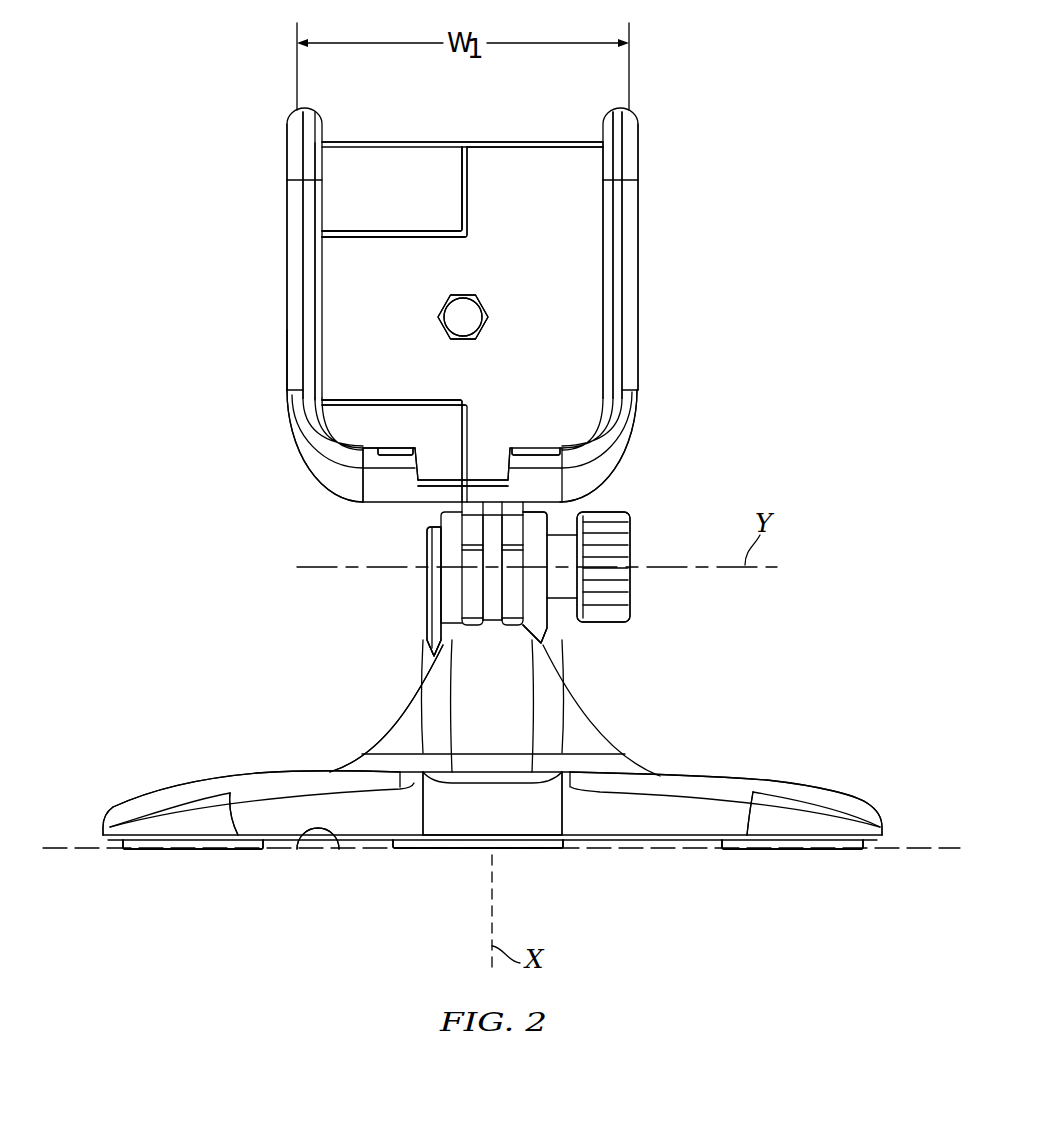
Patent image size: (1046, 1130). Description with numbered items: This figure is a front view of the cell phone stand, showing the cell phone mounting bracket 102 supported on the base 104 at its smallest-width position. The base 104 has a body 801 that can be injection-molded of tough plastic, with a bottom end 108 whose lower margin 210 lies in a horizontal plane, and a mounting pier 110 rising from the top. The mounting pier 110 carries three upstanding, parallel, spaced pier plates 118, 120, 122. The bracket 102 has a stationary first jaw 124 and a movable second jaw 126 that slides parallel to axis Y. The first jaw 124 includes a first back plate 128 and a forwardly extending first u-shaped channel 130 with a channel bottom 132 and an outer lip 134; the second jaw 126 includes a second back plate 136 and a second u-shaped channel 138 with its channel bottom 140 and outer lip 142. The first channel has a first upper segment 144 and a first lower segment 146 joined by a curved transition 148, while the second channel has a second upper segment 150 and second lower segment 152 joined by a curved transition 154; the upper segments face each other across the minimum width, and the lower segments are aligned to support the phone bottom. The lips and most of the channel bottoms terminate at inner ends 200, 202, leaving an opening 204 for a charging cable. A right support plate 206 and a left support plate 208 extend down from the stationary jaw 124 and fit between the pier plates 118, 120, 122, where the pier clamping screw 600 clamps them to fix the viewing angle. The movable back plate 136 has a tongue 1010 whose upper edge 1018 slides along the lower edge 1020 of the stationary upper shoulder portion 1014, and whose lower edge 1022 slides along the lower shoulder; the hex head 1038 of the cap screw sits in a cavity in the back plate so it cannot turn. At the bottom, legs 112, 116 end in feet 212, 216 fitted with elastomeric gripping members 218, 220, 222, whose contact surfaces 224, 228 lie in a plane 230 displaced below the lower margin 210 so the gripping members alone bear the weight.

The cell phone mounting bracket 102 is at (248, 172).
The base 104 is at (742, 740).
The bottom end 108 is at (628, 828).
The mounting pier 110 is at (390, 588).
The first leg 112 is at (822, 792).
The third leg 116 is at (186, 790).
The pier plate 118 is at (433, 622).
The pier plate 120 is at (492, 625).
The pier plate 122 is at (533, 612).
The first jaw 124 is at (288, 322).
The second jaw 126 is at (640, 182).
The first back plate 128 is at (395, 150).
The first u-shaped channel 130 is at (307, 258).
The channel bottom 132 is at (298, 177).
The outer lip 134 is at (327, 220).
The second back plate 136 is at (558, 198).
The second u-shaped channel 138 is at (640, 288).
The channel bottom 140 is at (622, 177).
The outer lip 142 is at (636, 238).
The first upper segment 144 is at (288, 368).
The first lower segment 146 is at (387, 487).
The curved transition 148 is at (313, 458).
The second upper segment 150 is at (640, 338).
The second lower segment 152 is at (548, 448).
The curved transition 154 is at (607, 470).
The inner end 200 is at (426, 448).
The inner end 202 is at (504, 452).
The opening 204 is at (478, 455).
The right support plate 206 is at (427, 655).
The left support plate 208 is at (550, 658).
The lower margin 210 is at (392, 850).
The foot 212 is at (873, 807).
The foot 216 is at (113, 808).
The gripping member 218 is at (820, 851).
The gripping member 220 is at (520, 850).
The gripping member 222 is at (150, 850).
The contact surface 224 is at (768, 850).
The contact surface 228 is at (210, 851).
The plane 230 is at (312, 851).
The pier clamping screw 600 is at (630, 596).
The body 801 is at (395, 727).
The tongue 1010 is at (405, 335).
The upper shoulder portion 1014 is at (443, 198).
The upper edge 1018 is at (360, 232).
The lower edge 1020 is at (413, 240).
The lower edge 1022 is at (350, 405).
The hex head 1038 is at (470, 316).